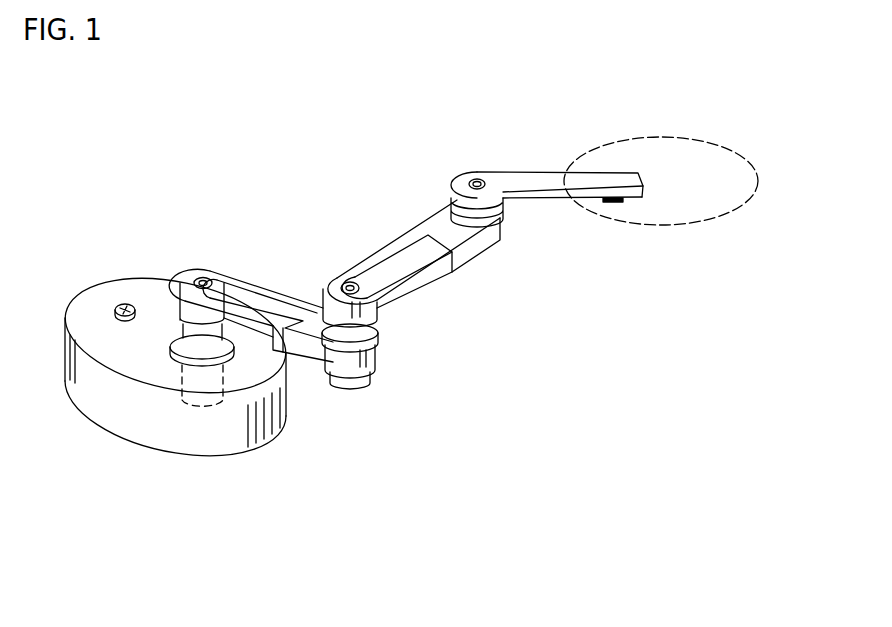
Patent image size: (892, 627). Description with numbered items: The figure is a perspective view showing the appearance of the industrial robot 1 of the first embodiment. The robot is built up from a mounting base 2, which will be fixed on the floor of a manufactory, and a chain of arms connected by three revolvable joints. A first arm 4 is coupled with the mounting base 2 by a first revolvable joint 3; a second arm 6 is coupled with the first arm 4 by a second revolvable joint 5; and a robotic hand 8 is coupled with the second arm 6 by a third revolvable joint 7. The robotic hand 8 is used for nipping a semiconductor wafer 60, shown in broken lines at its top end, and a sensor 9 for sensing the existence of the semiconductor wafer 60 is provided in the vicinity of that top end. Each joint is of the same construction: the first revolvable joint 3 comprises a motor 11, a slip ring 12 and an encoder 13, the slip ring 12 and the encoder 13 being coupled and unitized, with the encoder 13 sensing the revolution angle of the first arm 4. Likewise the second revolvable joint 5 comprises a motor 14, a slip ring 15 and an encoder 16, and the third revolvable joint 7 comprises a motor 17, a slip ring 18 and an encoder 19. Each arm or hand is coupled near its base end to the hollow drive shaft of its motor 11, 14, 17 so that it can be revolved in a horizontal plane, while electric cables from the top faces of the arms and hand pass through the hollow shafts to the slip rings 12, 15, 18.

The industrial robot 1 is at (313, 104).
The mounting base 2 is at (140, 430).
The first revolvable joint 3 is at (251, 449).
The first arm 4 is at (297, 294).
The second revolvable joint 5 is at (396, 411).
The second arm 6 is at (423, 218).
The third revolvable joint 7 is at (532, 280).
The robotic hand 8 is at (587, 183).
The sensor 9 is at (612, 203).
The motor 11 is at (237, 350).
The slip ring 12 is at (231, 430).
The encoder 13 is at (208, 408).
The motor 14 is at (385, 346).
The slip ring 15 is at (379, 411).
The encoder 16 is at (379, 411).
The motor 17 is at (505, 213).
The slip ring 18 is at (506, 267).
The encoder 19 is at (506, 267).
The semiconductor wafer 60 is at (673, 158).